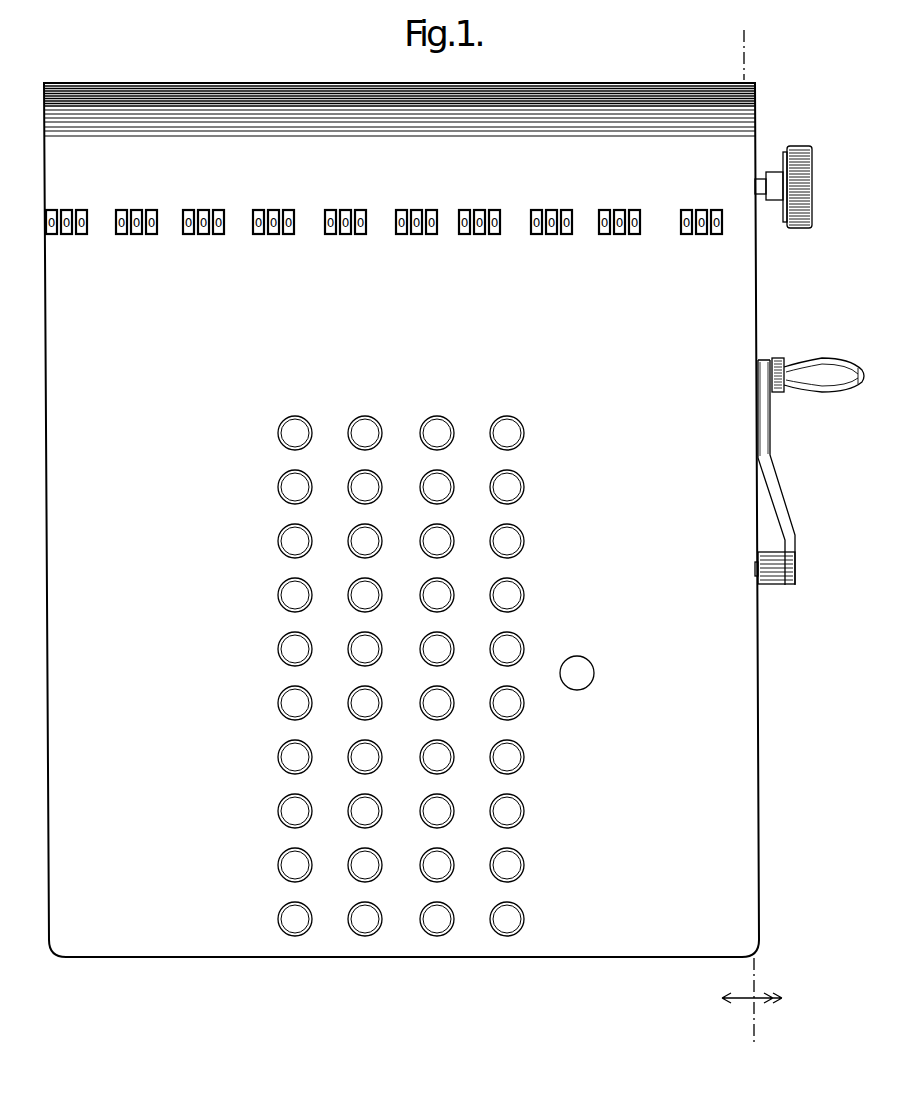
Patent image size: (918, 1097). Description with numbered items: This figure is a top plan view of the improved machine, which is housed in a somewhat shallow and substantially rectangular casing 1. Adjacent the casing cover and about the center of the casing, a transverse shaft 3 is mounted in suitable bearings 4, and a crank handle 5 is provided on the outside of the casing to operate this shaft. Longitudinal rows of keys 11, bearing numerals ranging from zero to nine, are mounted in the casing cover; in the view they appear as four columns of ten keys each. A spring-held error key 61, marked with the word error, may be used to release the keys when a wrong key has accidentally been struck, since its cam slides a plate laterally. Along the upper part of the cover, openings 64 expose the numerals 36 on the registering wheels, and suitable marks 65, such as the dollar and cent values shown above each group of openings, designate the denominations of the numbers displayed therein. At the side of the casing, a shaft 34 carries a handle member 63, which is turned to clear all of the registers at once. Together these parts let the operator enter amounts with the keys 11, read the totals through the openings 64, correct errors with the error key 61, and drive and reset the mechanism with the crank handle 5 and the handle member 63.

The casing 1 is at (744, 319).
The transverse shaft 3 is at (752, 538).
The bearings 4 is at (774, 585).
The crank handle 5 is at (814, 368).
The keys 11 is at (497, 428).
The shaft 34 is at (758, 184).
The numerals 36 is at (122, 236).
The error key 61 is at (590, 667).
The handle member 63 is at (806, 230).
The openings 64 is at (51, 236).
The marks 65 is at (207, 172).